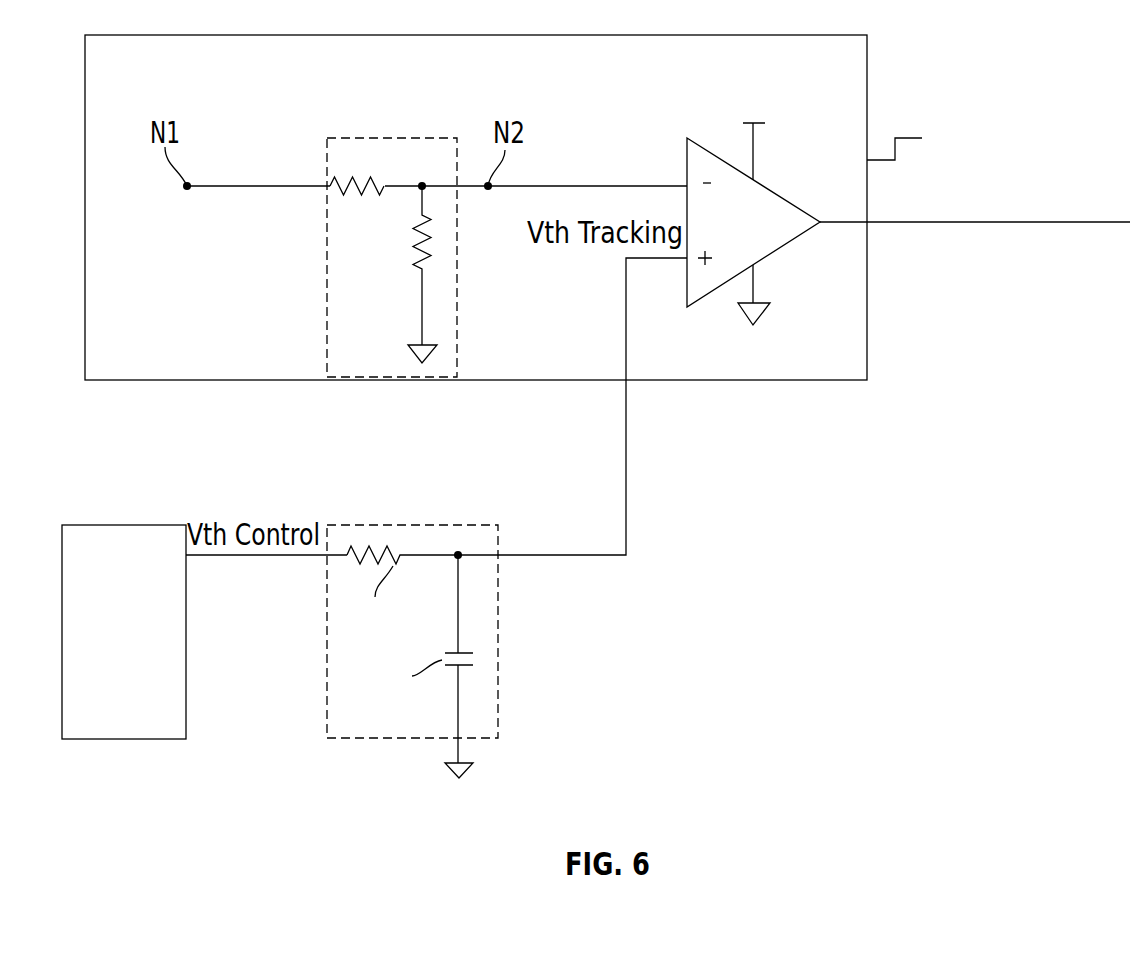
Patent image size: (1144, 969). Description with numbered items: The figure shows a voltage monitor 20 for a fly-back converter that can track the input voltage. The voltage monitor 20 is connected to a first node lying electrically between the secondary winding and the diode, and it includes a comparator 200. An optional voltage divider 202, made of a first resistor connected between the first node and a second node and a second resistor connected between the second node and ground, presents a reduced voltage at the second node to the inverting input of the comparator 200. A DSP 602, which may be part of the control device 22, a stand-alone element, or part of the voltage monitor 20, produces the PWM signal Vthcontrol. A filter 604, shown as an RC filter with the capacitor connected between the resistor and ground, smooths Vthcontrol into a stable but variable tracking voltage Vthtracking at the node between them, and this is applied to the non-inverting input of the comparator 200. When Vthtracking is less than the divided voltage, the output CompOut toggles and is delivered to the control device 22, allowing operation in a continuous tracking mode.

The voltage monitor 20 is at (905, 138).
The control device 22 is at (1075, 225).
The comparator 200 is at (770, 257).
The voltage divider 202 is at (392, 138).
The DSP 602 is at (140, 525).
The filter 604 is at (498, 660).